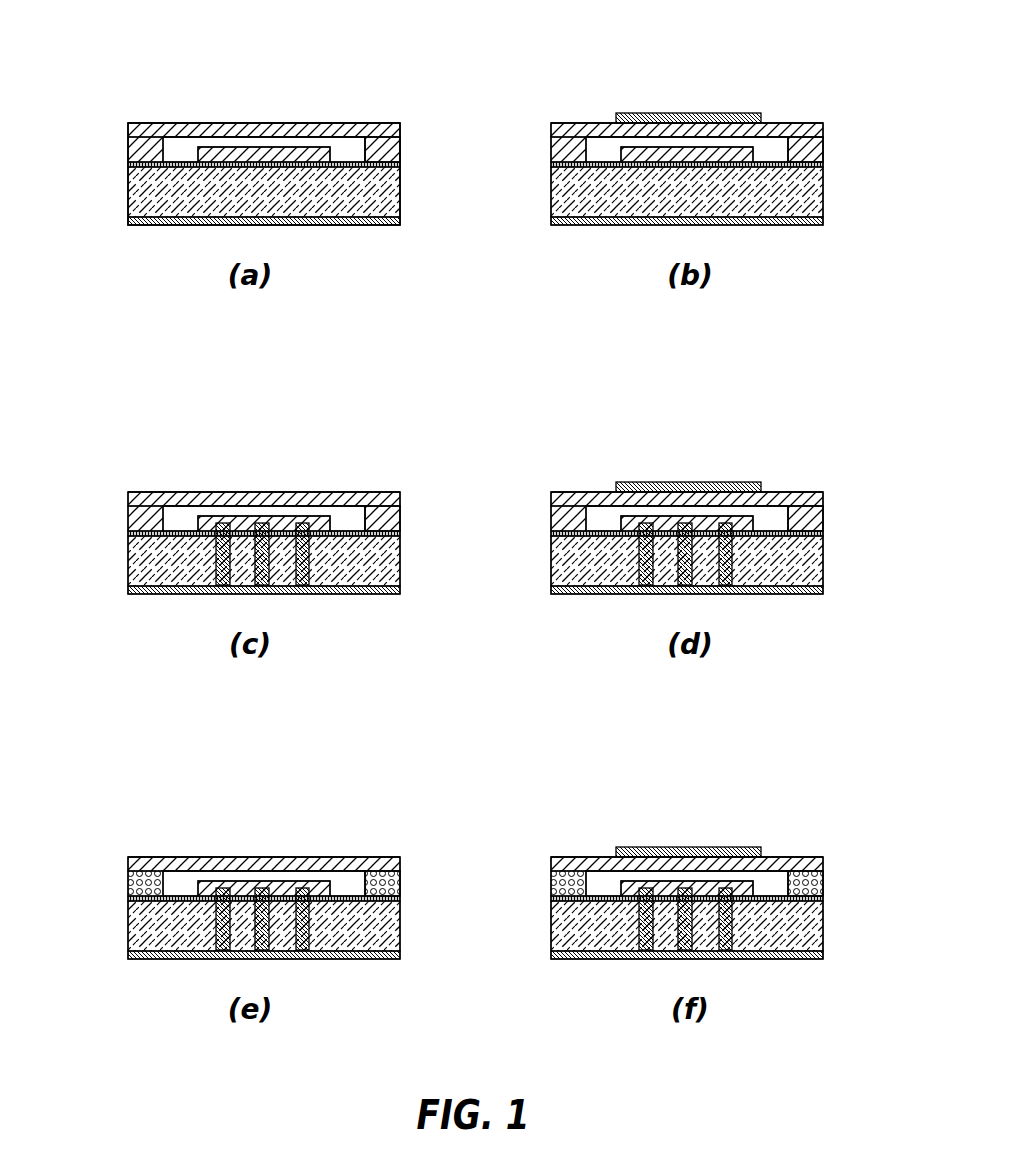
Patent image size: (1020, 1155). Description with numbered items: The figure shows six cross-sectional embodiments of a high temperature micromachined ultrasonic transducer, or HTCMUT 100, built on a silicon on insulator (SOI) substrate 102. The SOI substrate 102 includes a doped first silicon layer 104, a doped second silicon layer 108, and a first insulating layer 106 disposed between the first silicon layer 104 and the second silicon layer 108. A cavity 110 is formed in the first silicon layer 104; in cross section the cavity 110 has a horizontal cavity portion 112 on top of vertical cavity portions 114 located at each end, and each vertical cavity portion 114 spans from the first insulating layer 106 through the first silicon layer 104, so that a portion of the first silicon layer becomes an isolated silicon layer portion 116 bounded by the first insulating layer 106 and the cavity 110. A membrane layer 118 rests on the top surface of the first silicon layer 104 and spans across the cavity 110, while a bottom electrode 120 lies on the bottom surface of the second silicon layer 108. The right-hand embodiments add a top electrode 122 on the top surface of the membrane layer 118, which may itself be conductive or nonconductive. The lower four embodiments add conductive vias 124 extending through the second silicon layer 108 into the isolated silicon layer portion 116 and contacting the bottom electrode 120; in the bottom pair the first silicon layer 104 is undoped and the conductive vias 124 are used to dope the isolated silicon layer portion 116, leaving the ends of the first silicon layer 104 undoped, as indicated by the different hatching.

The HTCMUT 100 is at (96, 58).
The SOI substrate 102 is at (118, 157).
The first silicon layer 104 is at (400, 147).
The first insulating layer 106 is at (127, 168).
The second silicon layer 108 is at (400, 190).
The cavity 110 is at (176, 143).
The horizontal cavity portion 112 is at (208, 135).
The vertical cavity portion 114 is at (365, 150).
The isolated silicon layer portion 116 is at (255, 147).
The membrane layer 118 is at (340, 123).
The bottom electrode 120 is at (173, 227).
The top electrode 122 is at (727, 115).
The conductive via 124 is at (306, 556).